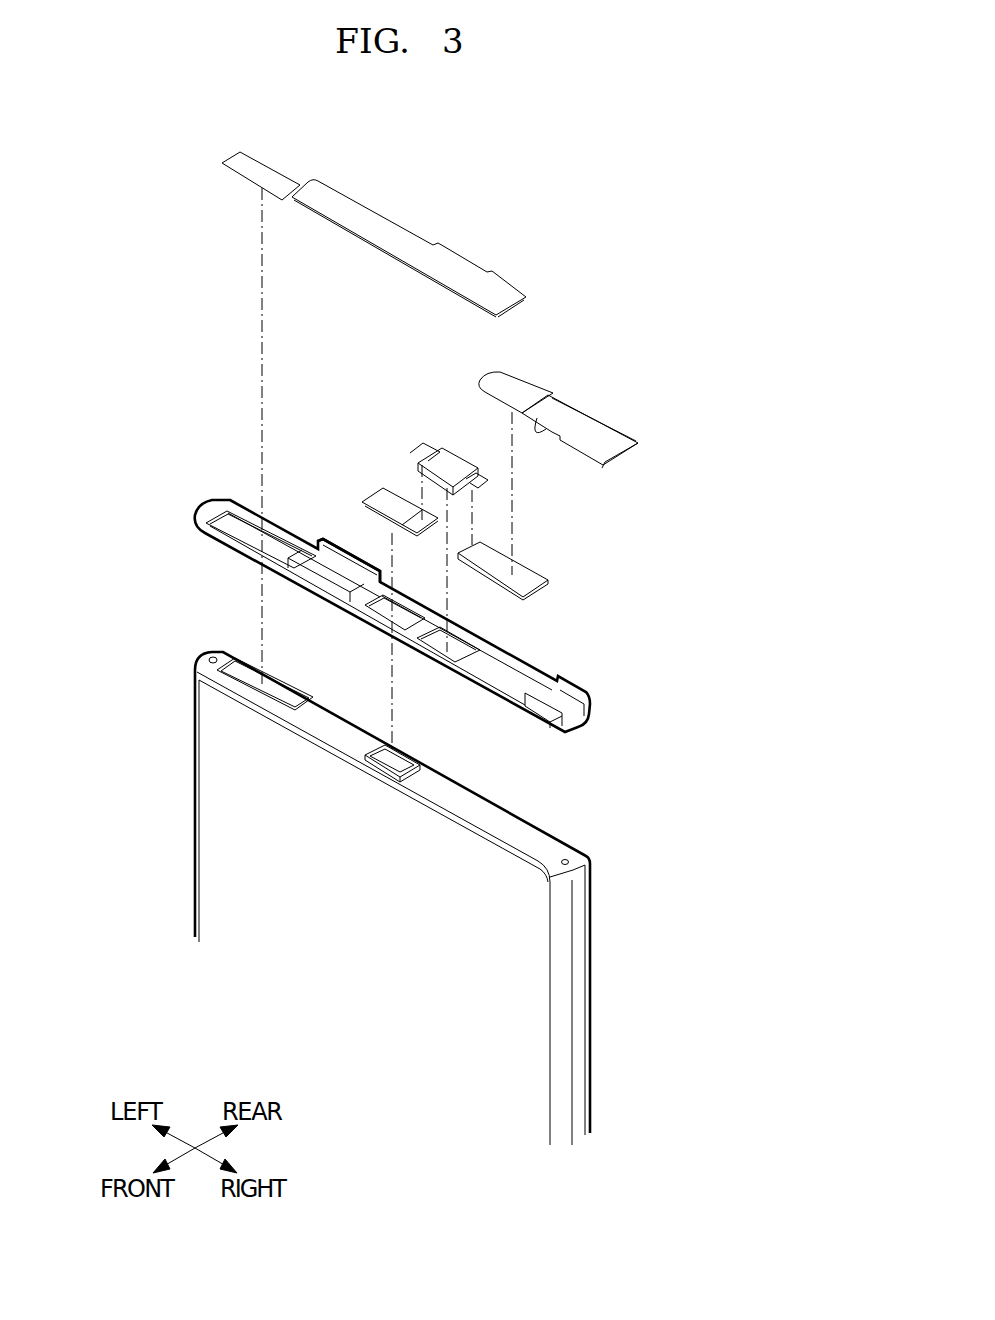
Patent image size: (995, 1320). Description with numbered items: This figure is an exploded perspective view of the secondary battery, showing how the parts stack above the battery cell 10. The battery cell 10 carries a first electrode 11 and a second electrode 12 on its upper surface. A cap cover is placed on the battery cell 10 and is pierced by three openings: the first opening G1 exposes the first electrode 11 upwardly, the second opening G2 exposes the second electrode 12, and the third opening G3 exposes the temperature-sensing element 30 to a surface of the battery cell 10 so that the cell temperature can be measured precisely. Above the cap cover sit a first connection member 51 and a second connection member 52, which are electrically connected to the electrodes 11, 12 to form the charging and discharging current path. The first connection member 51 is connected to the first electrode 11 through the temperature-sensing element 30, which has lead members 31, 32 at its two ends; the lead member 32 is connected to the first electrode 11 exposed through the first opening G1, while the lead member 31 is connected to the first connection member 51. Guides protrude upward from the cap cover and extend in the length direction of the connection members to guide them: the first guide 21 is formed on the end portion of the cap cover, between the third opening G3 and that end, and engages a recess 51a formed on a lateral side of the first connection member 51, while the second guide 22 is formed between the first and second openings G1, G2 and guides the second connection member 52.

The battery cell 10 is at (441, 884).
The first electrode 11 is at (400, 758).
The second electrode 12 is at (272, 695).
The first guide 21 is at (401, 586).
The second guide 22 is at (342, 548).
The temperature-sensing element 30 is at (455, 462).
The lead member 31 is at (532, 577).
The lead member 32 is at (375, 497).
The first connection member 51 is at (559, 400).
The recess 51a is at (537, 422).
The second connection member 52 is at (370, 213).
The first opening G1 is at (400, 617).
The second opening G2 is at (235, 523).
The third opening G3 is at (455, 647).